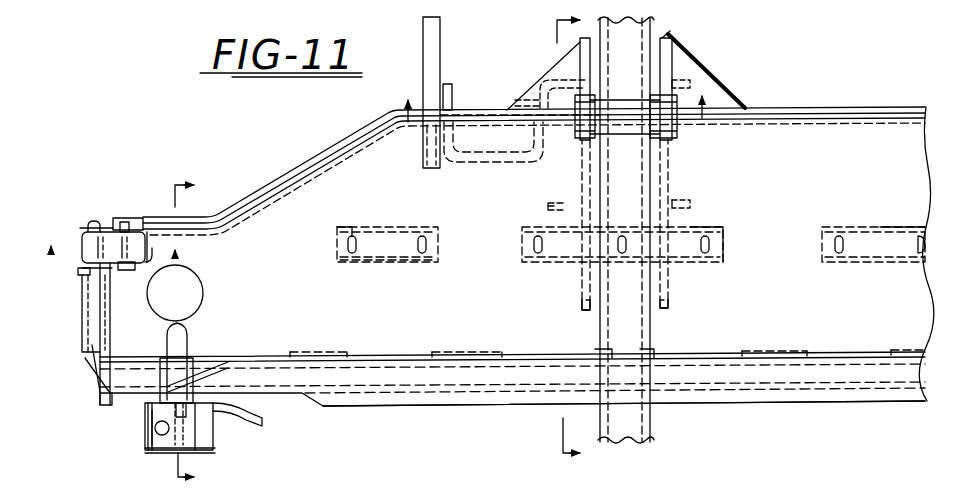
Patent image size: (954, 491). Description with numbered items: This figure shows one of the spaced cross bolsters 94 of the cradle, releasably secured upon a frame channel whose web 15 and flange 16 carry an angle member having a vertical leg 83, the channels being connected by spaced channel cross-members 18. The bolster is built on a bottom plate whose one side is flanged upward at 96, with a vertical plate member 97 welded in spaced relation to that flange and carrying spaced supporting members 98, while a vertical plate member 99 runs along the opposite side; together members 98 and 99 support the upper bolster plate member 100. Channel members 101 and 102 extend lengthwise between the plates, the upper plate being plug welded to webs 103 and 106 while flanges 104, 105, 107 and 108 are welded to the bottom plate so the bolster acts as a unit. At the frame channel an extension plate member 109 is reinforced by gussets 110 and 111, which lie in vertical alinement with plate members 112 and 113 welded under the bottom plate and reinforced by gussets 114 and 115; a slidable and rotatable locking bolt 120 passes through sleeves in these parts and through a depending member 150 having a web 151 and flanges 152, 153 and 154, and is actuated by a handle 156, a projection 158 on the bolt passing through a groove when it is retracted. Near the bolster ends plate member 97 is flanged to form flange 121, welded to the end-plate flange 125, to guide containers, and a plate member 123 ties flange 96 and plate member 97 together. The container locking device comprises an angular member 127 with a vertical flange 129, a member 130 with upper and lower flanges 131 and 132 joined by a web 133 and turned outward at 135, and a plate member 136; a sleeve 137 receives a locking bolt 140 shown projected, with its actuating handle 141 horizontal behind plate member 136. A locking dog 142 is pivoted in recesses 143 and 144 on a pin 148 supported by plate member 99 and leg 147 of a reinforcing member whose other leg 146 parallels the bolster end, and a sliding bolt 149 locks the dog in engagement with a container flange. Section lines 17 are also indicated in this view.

The web 15 is at (650, 428).
The flange 16 is at (628, 455).
The section line 17 is at (196, 333).
The channel cross-member 18 is at (115, 242).
The vertical leg 83 is at (606, 340).
The cross bolster 94 is at (873, 106).
The flange 96 is at (421, 392).
The vertical plate member 97 is at (383, 356).
The supporting member 98 is at (305, 353).
The vertical plate member 99 is at (88, 226).
The upper bolster plate member 100 is at (810, 175).
The channel member 101 is at (378, 228).
The channel member 102 is at (696, 226).
The web 103 is at (396, 245).
The flange 104 is at (342, 228).
The flange 105 is at (390, 262).
The web 106 is at (686, 248).
The flange 107 is at (524, 229).
The flange 108 is at (550, 262).
The extension plate member 109 is at (692, 62).
The gusset 110 is at (582, 52).
The gusset 111 is at (666, 50).
The plate member 112 is at (584, 312).
The plate member 113 is at (670, 304).
The gusset 114 is at (692, 82).
The gusset 115 is at (547, 205).
The locking bolt 120 is at (462, 115).
The flange 121 is at (148, 378).
The plate member 123 is at (505, 400).
The flange 125 is at (100, 372).
The angular member 127 is at (214, 448).
The vertical flange 129 is at (150, 453).
The member 130 is at (150, 448).
The upper flange 131 is at (154, 426).
The lower flange 132 is at (172, 452).
The vertical web 133 is at (146, 437).
The flange 135 is at (210, 430).
The plate member 136 is at (181, 416).
The sleeve 137 is at (196, 372).
The locking bolt 140 is at (180, 346).
The actuating handle 141 is at (262, 422).
The locking dog 142 is at (80, 256).
The recess 143 is at (80, 270).
The recess 144 is at (150, 254).
The leg 146 is at (148, 260).
The leg 147 is at (110, 275).
The pin 148 is at (126, 222).
The sliding bolt 149 is at (95, 320).
The member 150 is at (546, 168).
The web 151 is at (494, 156).
The flange 152 is at (452, 92).
The flange 153 is at (528, 100).
The flange 154 is at (560, 80).
The handle 156 is at (432, 62).
The projection 158 is at (548, 76).